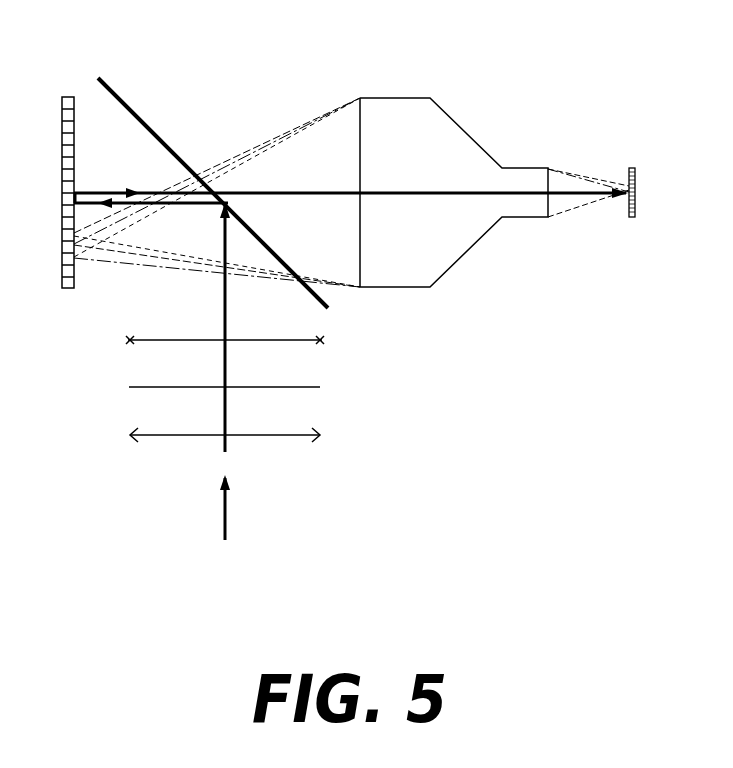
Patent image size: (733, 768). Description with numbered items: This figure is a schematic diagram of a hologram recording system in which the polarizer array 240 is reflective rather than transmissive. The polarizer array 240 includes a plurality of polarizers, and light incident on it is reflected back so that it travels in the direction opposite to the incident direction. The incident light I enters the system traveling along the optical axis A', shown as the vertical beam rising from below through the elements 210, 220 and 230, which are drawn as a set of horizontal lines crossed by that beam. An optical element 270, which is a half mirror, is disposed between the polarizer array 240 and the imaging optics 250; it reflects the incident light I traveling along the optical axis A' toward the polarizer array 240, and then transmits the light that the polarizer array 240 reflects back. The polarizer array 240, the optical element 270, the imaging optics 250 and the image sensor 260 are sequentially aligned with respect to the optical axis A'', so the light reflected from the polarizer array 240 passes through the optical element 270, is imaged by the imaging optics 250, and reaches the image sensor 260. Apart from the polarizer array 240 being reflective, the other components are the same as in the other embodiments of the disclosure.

The object plane / input distance marker 210 is at (170, 437).
The intermediate plane 220 is at (318, 386).
The image plane marker 230 is at (162, 338).
The polarizer array 240 is at (68, 97).
The imaging optics 250 is at (407, 105).
The image sensor 260 is at (632, 168).
The optical element 270 is at (133, 110).
The incident light I is at (351, 379).
The optical axis A' is at (259, 311).
The optical axis A'' is at (528, 229).